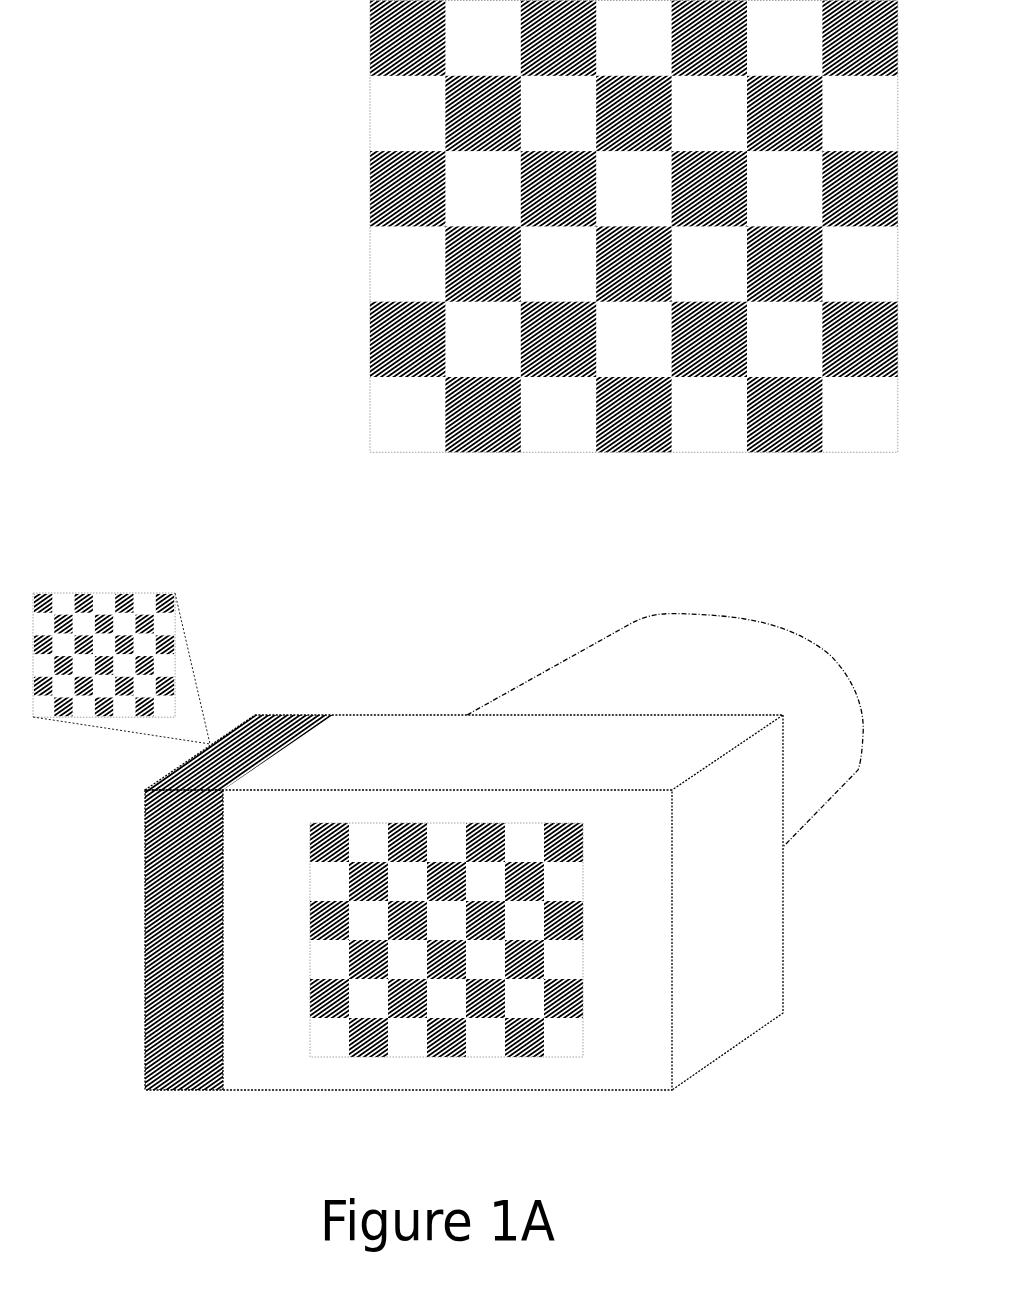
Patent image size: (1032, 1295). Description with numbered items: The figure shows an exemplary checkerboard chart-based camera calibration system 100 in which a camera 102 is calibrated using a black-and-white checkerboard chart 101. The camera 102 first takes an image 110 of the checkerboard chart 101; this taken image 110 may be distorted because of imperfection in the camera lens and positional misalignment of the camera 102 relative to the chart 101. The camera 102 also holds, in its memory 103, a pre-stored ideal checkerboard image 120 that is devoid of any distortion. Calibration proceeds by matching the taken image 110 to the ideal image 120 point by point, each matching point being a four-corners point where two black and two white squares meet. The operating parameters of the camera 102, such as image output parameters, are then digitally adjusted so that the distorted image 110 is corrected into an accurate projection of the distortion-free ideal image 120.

The checkerboard chart-based camera calibration system 100 is at (515, 227).
The black-and-white checkerboard chart 101 is at (370, 330).
The camera 102 is at (783, 958).
The camera's memory 103 is at (277, 715).
The image 110 is at (583, 1033).
The ideal checkerboard image 120 is at (113, 595).